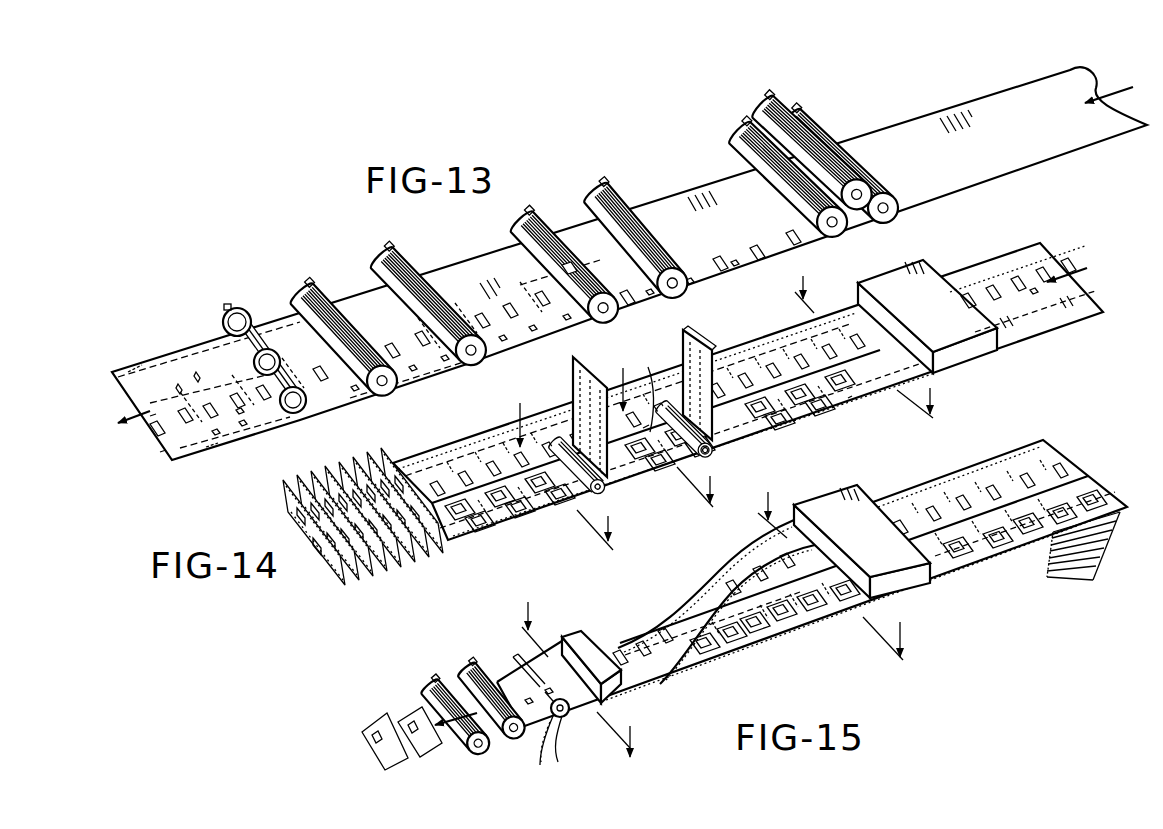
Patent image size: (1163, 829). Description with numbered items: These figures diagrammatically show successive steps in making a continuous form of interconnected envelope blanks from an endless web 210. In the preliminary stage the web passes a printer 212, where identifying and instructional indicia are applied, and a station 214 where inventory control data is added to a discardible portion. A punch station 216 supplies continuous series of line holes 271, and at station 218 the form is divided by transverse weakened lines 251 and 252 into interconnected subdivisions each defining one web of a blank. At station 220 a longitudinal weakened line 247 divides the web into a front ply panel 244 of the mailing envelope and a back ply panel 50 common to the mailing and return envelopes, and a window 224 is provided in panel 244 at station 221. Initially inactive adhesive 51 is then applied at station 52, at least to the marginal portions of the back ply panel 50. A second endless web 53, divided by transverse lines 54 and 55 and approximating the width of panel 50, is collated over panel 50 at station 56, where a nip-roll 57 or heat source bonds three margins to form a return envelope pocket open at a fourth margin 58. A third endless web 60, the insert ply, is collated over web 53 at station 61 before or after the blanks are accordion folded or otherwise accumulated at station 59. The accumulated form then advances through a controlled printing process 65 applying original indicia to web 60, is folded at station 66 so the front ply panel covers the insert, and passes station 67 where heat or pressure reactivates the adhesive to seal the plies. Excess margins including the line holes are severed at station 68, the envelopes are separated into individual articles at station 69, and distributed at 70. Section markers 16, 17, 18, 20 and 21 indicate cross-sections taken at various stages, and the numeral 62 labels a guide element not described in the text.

In FIG. 13, the endless web 210 is at (1080, 82).
In FIG. 14, the endless web 210 is at (1037, 264).
In FIG. 13, the printer 212 is at (780, 98).
In FIG. 13, the inventory control data station 214 is at (603, 188).
In FIG. 13, the window station 221 is at (527, 212).
In FIG. 13, the dividing station 218 is at (386, 252).
In FIG. 13, the punch station 216 is at (303, 285).
In FIG. 13, the longitudinal weakened line station 220 is at (239, 304).
In FIG. 13, the transverse weakened line 251 is at (198, 370).
In FIG. 13, the transverse weakened line 252 is at (180, 382).
In FIG. 13, the line holes 271 is at (128, 372).
In FIG. 15, the line holes 271 is at (559, 755).
In FIG. 13, the back ply panel 50 is at (112, 373).
In FIG. 14, the back ply panel 50 is at (803, 400).
In FIG. 13, the longitudinal weakened line 247 is at (153, 414).
In FIG. 14, the longitudinal weakened line 247 is at (1030, 288).
In FIG. 13, the front ply panel 244 is at (163, 450).
In FIG. 14, the front ply panel 244 is at (453, 462).
In FIG. 15, the front ply panel 244 is at (1047, 460).
In FIG. 13, the window 224 is at (238, 410).
In FIG. 15, the window 224 is at (644, 642).
In FIG. 14, the glue applying station 52 is at (923, 262).
In FIG. 14, the second endless web 53 is at (705, 333).
In FIG. 14, the transverse dividing line 54 is at (686, 340).
In FIG. 14, the transverse dividing line 55 is at (647, 376).
In FIG. 14, the fourth margin 58 is at (646, 430).
In FIG. 14, the third endless web 60 is at (510, 505).
In FIG. 15, the third endless web 60 is at (1012, 542).
In FIG. 14, the guide plate 62 is at (572, 423).
In FIG. 14, the collating station 61 is at (597, 494).
In FIG. 14, the nip-roll 57 is at (690, 440).
In FIG. 14, the collating station 56 is at (722, 452).
In FIG. 14, the adhesive 51 is at (850, 396).
In FIG. 14, the accumulating station 59 is at (407, 568).
In FIG. 15, the controlled printing process 65 is at (850, 490).
In FIG. 15, the fold station 66 is at (693, 597).
In FIG. 15, the activating station 67 is at (573, 630).
In FIG. 15, the separating station 69 is at (459, 680).
In FIG. 15, the distribution 70 is at (388, 720).
In FIG. 15, the severing station 68 is at (566, 729).
In FIG. 14, the section line 16- 16 is at (871, 344).
In FIG. 14, the section line 17- 17 is at (675, 426).
In FIG. 14, the section line 18- 18 is at (568, 472).
In FIG. 15, the section line 20- 20 is at (844, 563).
In FIG. 15, the section line 21- 21 is at (584, 667).